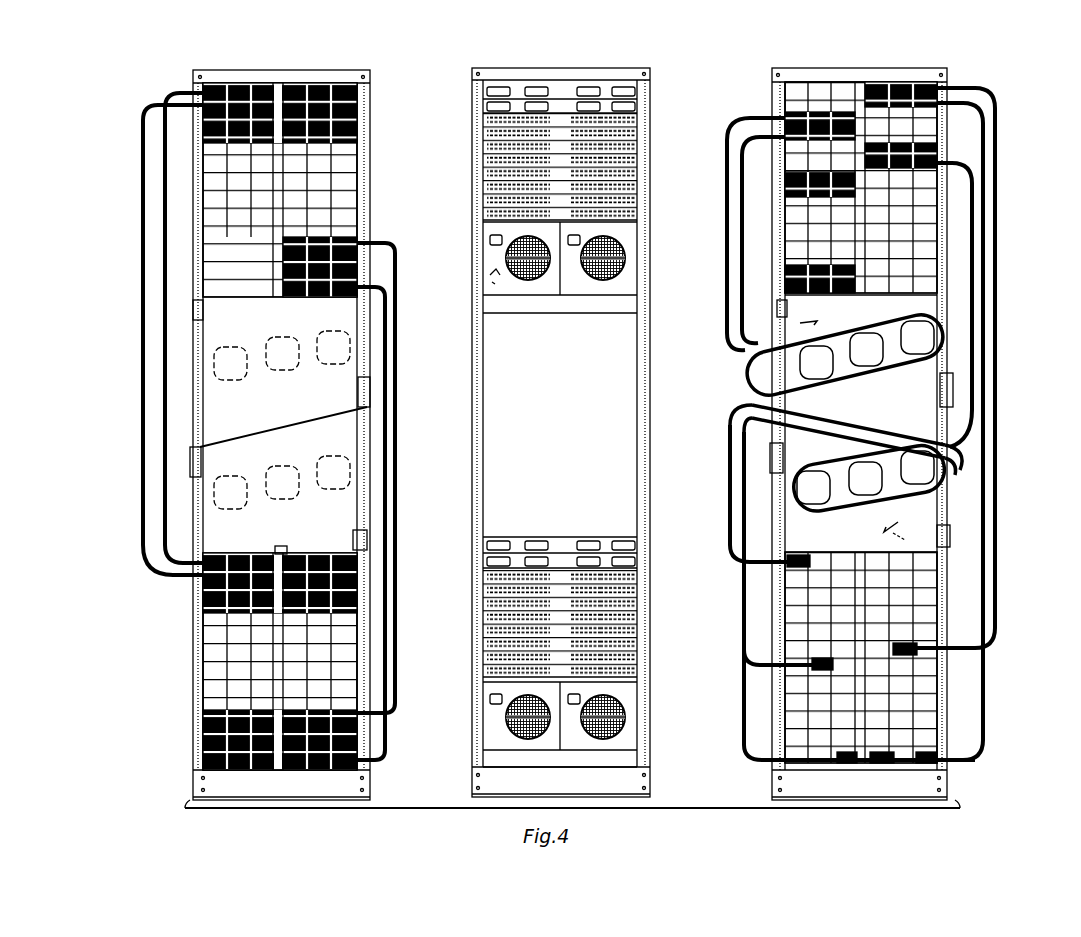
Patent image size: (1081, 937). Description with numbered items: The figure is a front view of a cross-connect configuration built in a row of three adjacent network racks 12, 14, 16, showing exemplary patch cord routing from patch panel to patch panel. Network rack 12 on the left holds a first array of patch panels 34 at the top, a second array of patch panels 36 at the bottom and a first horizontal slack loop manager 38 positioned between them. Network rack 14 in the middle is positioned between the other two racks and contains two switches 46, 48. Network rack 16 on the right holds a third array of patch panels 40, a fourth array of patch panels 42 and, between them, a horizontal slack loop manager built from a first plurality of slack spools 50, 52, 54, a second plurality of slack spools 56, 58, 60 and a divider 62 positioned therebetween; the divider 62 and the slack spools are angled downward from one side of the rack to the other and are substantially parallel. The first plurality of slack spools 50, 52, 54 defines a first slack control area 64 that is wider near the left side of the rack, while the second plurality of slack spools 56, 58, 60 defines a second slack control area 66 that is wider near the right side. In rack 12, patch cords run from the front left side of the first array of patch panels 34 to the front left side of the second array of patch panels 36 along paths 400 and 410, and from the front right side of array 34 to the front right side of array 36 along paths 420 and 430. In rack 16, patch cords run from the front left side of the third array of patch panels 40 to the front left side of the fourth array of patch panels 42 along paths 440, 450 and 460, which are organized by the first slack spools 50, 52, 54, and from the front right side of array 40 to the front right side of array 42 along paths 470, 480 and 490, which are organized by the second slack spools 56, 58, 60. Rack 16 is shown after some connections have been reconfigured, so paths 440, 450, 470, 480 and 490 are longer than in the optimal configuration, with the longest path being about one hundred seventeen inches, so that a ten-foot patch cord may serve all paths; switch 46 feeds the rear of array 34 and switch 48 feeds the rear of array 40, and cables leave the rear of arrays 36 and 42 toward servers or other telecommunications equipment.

The network rack 12 is at (195, 722).
The network rack 14 is at (478, 125).
The network rack 16 is at (775, 88).
The first array of patch panels 34 is at (282, 553).
The second array of patch panels 36 is at (205, 303).
The first horizontal slack loop manager 38 is at (125, 490).
The third array of patch panels 40 is at (855, 548).
The fourth array of patch panels 42 is at (862, 298).
The switch 46 is at (500, 250).
The switch 48 is at (500, 707).
The first slack spool 50 is at (805, 362).
The second slack spool 52 is at (870, 352).
The third slack spool 54 is at (920, 335).
The fourth slack spool 56 is at (925, 465).
The fifth slack spool 58 is at (880, 495).
The sixth slack spool 60 is at (810, 487).
The divider 62 is at (752, 410).
The first slack control area 64 is at (752, 345).
The second slack control area 66 is at (945, 545).
The patch cord path 400 is at (190, 92).
The patch cord path 410 is at (143, 142).
The patch cord path 420 is at (395, 245).
The patch cord path 430 is at (390, 298).
The patch cord path 440 is at (750, 118).
The patch cord path 450 is at (727, 205).
The patch cord path 460 is at (742, 285).
The patch cord path 470 is at (980, 88).
The patch cord path 480 is at (983, 105).
The patch cord path 490 is at (972, 165).